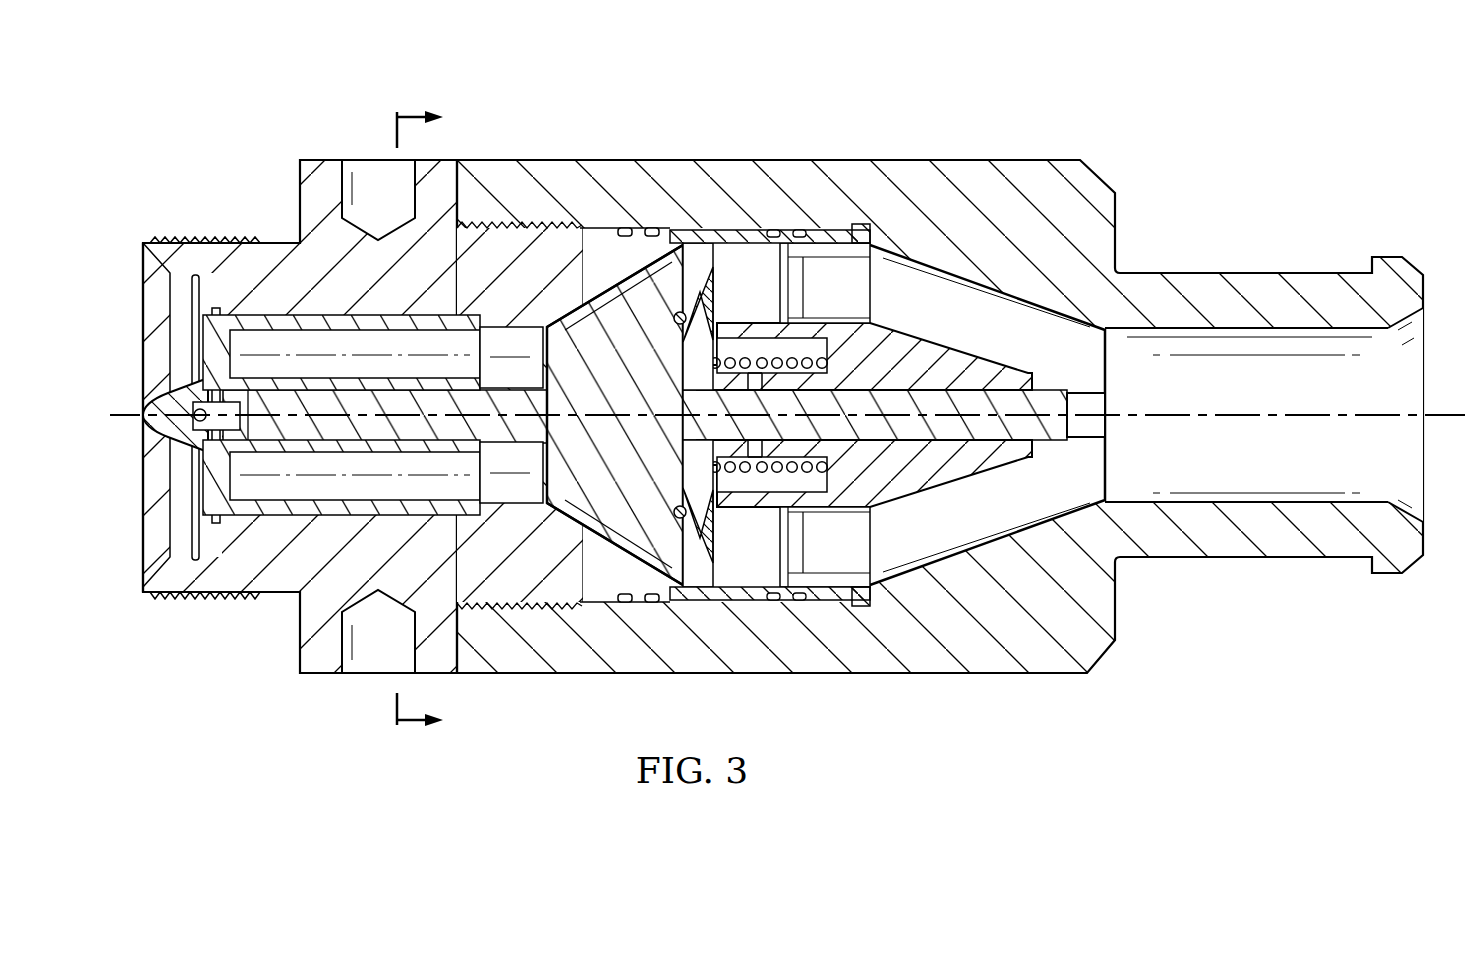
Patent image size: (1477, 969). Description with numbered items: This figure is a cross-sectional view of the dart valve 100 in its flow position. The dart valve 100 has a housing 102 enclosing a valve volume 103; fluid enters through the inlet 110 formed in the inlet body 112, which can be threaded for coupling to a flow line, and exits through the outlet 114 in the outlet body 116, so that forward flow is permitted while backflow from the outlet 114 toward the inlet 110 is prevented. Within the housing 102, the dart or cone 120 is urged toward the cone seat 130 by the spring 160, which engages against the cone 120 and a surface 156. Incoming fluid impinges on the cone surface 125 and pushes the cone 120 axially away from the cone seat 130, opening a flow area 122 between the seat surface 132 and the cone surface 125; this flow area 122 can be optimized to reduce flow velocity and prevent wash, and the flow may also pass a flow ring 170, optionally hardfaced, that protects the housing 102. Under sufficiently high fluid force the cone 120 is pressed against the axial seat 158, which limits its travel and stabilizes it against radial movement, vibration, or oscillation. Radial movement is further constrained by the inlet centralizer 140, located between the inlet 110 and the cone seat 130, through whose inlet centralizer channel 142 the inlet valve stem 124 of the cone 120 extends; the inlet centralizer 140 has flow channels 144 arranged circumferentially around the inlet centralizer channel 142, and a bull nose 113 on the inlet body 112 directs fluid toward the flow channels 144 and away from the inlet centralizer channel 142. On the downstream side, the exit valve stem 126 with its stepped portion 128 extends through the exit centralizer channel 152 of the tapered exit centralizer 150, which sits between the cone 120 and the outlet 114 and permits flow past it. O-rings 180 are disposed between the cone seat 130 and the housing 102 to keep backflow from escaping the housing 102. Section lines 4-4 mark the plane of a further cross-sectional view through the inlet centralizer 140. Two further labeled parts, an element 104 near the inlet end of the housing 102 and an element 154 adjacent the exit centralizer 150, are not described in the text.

The dart valve 100 is at (923, 72).
The housing 102 is at (1025, 168).
The valve volume 103 is at (903, 560).
The connector 104 is at (447, 185).
The inlet 110 is at (126, 262).
The inlet body 112 is at (200, 600).
The bull nose 113 is at (163, 403).
The outlet 114 is at (1443, 289).
The outlet body 116 is at (1313, 282).
The cone 120 is at (630, 330).
The flow area 122 is at (610, 533).
The inlet valve stem 124 is at (338, 432).
The cone surface 125 is at (627, 527).
The exit valve stem 126 is at (992, 432).
The stepped portion 128 is at (1093, 377).
The cone seat 130 is at (690, 263).
The seat surface 132 is at (595, 522).
The inlet centralizer 140 is at (424, 320).
The inlet centralizer channel 142 is at (263, 320).
The flow channels 144 is at (308, 340).
The exit centralizer 150 is at (910, 343).
The exit centralizer channel 152 is at (950, 443).
The cup 154 is at (988, 358).
The surface 156 is at (870, 507).
The axial seat 158 is at (717, 314).
The spring 160 is at (743, 472).
The flow ring 170 is at (760, 232).
The o-rings 180 is at (657, 603).
The section lines 4 is at (428, 418).